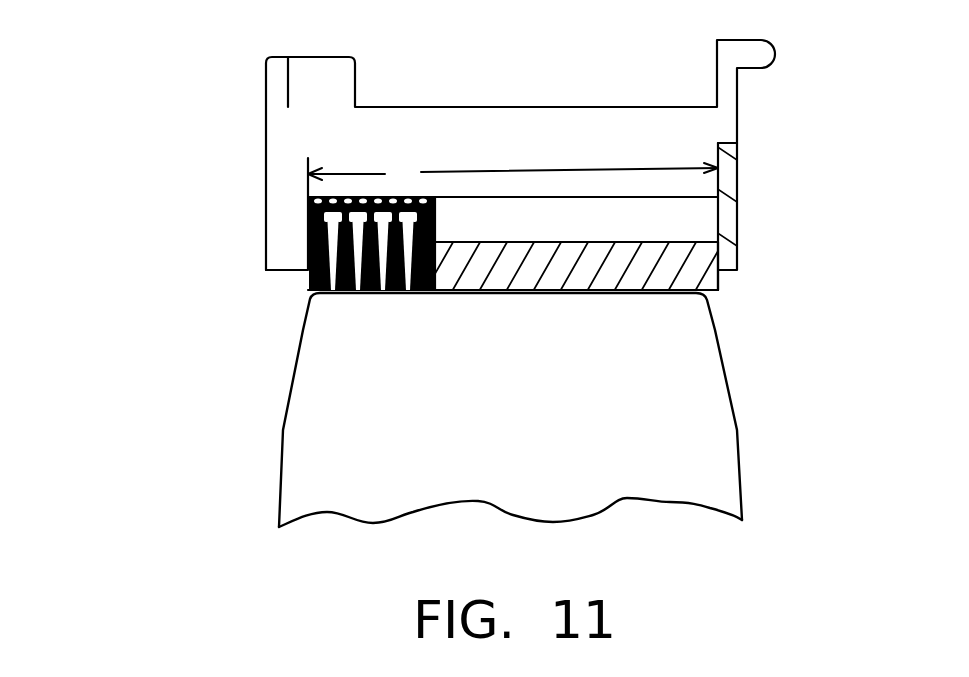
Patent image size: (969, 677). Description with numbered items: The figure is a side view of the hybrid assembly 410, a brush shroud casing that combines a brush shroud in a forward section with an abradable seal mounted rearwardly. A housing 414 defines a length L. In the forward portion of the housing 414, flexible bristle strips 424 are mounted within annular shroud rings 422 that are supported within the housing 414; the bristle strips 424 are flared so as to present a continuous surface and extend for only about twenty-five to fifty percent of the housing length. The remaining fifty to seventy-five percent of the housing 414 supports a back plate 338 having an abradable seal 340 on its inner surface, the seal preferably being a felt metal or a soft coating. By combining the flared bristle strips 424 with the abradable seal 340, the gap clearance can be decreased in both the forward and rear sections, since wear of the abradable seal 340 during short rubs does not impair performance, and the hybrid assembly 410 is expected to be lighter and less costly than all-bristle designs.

The hybrid assembly 410 is at (238, 270).
The housing 414 is at (577, 145).
The annular shroud rings 422 is at (322, 193).
The flexible bristle strips 424 is at (306, 277).
The back plate 338 is at (675, 228).
The abradable seal 340 is at (720, 290).